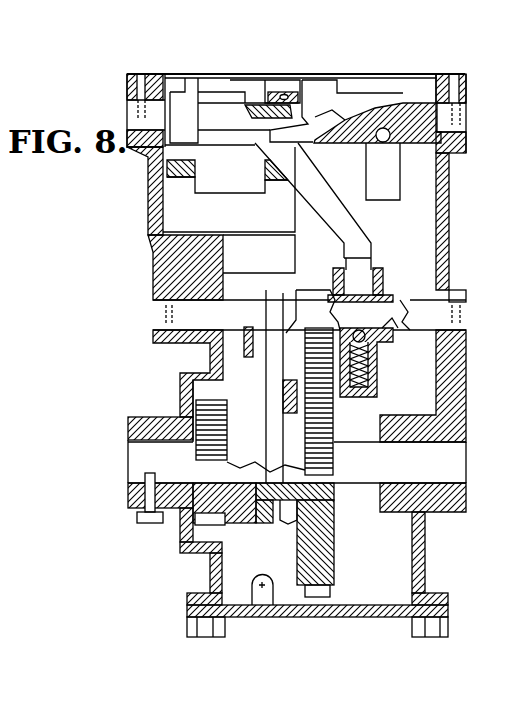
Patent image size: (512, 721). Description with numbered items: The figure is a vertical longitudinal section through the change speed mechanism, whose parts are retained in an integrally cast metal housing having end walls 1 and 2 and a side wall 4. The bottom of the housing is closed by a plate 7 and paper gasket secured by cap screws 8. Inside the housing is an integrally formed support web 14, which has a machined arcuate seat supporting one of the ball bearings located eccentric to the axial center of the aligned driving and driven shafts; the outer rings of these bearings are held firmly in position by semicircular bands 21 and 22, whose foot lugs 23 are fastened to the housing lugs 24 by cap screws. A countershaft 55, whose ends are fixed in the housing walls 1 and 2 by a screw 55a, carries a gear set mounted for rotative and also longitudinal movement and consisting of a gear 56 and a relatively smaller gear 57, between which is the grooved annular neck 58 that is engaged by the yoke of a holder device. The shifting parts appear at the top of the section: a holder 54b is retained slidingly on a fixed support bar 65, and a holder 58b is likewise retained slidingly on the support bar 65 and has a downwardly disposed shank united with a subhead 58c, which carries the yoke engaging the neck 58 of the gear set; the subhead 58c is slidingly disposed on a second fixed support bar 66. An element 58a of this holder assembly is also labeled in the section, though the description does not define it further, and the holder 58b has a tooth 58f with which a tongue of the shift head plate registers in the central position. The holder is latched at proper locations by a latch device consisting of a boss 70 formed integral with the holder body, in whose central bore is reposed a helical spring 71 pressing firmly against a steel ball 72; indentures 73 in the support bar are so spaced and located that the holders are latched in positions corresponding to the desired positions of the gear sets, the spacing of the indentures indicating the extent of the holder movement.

The end wall 1 is at (446, 198).
The end wall 2 is at (150, 163).
The side wall 4 is at (400, 553).
The plate 7 is at (395, 618).
The cap screws 8 is at (428, 637).
The support web 14 is at (192, 242).
The semicircular band 21 is at (162, 196).
The semicircular band 22 is at (267, 170).
The foot lugs 23 is at (175, 222).
The housing lugs 24 is at (297, 240).
The holder 54b is at (363, 95).
The countershaft 55 is at (347, 442).
The screw 55a is at (151, 525).
The gear 56 is at (332, 549).
The gear 57 is at (223, 520).
The grooved annular neck 58 is at (288, 513).
The shaft extension 58a is at (290, 372).
The holder 58b is at (316, 88).
The subhead 58c is at (199, 96).
The tooth 58f is at (279, 80).
The fixed support bar 65 is at (419, 100).
The fixed support bar 66 is at (157, 314).
The boss 70 is at (378, 393).
The helical spring 71 is at (378, 373).
The steel ball 72 is at (364, 331).
The indentures 73 is at (398, 331).